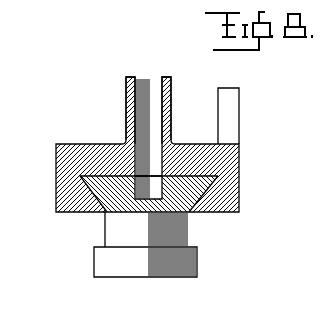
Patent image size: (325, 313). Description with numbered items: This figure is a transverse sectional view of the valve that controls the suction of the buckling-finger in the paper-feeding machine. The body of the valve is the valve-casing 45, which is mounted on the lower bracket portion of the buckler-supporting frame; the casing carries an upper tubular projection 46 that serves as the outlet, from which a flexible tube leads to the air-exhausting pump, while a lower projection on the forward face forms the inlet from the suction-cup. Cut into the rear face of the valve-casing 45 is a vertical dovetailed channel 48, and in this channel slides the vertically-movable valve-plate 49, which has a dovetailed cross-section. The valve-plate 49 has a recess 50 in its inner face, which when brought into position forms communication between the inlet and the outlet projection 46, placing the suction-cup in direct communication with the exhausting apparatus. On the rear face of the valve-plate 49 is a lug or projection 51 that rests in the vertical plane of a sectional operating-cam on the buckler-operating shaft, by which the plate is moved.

The valve-casing 45 is at (66, 171).
The upper tubular projection 46 is at (127, 103).
The dovetailed channel 48 is at (200, 198).
The valve-plate 49 is at (108, 201).
The recess 50 is at (152, 192).
The lug or projection 51 is at (147, 265).